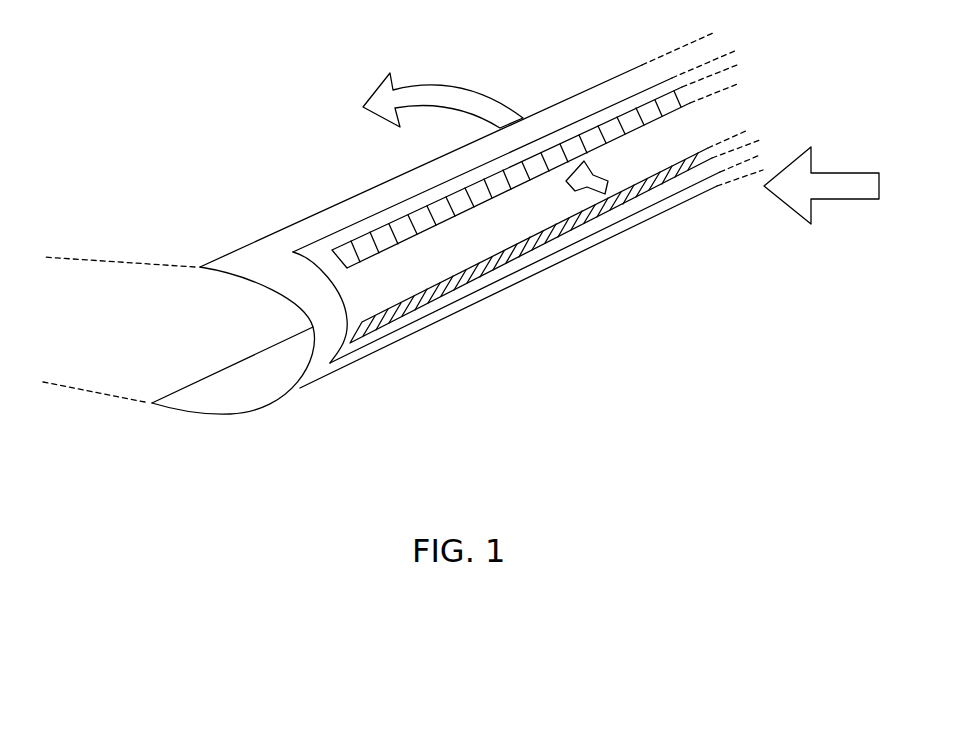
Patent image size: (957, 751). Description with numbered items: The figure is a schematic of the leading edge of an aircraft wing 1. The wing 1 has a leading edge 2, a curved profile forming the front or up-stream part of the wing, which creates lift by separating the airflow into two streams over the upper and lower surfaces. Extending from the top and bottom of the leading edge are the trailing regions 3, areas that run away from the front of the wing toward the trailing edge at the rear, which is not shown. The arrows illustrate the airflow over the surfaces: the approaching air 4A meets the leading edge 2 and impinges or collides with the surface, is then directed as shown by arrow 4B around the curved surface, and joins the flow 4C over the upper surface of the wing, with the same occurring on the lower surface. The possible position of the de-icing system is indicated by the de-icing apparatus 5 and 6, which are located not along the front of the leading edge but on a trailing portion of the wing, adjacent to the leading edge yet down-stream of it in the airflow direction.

The aircraft wing 1 is at (262, 412).
The leading edge 2 is at (462, 287).
The trailing regions 3 is at (318, 256).
The de-icing apparatus 5 is at (378, 240).
The de-icing apparatus 6 is at (380, 323).
The air 4A is at (821, 195).
The arrow 4B is at (607, 169).
The flow 4C is at (443, 93).